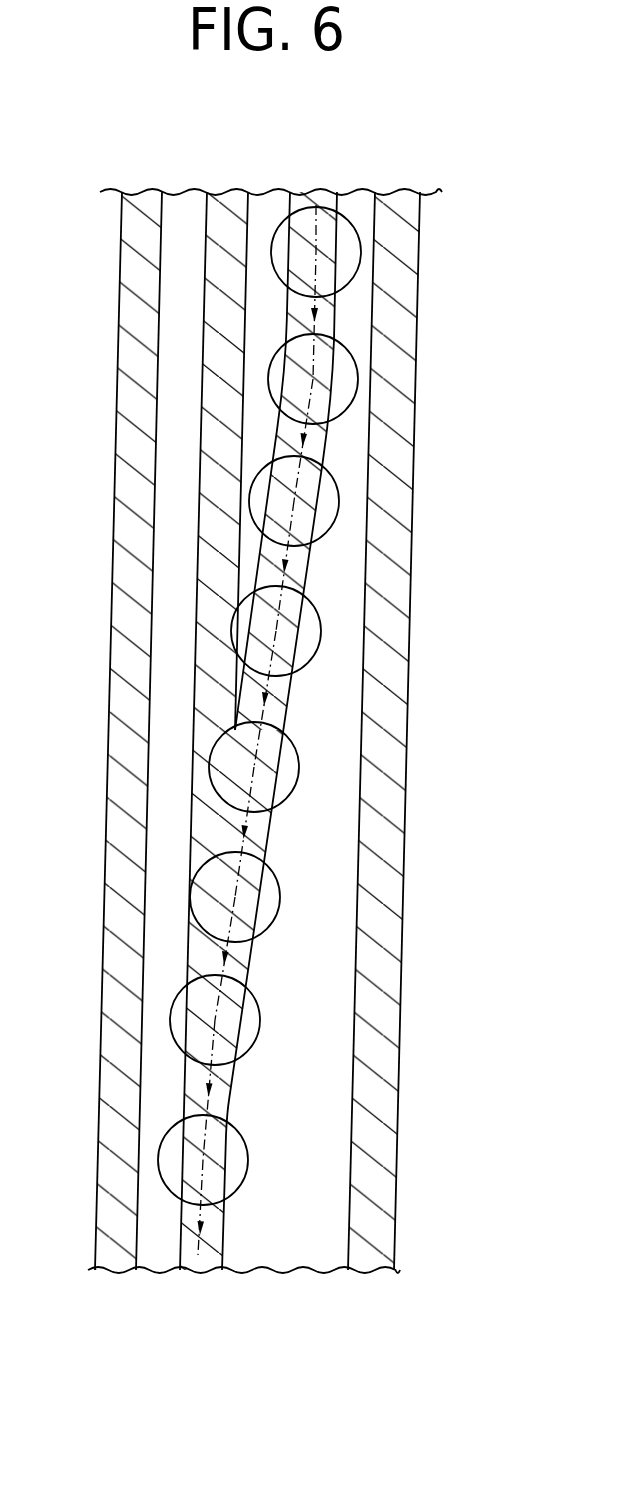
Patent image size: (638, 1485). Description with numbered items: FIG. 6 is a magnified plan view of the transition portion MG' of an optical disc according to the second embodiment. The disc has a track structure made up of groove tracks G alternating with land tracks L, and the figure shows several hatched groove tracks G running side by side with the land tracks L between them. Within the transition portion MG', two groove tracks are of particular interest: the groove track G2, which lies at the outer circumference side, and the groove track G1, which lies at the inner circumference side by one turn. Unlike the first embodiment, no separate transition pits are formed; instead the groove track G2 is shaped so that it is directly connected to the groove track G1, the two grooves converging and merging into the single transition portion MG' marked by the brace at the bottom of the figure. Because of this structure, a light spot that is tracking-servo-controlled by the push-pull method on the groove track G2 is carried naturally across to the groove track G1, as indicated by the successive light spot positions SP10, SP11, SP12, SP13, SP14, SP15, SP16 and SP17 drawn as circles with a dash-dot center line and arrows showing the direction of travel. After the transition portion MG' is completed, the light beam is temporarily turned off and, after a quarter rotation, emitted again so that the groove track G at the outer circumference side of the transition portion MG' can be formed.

The land track L is at (105, 194).
The groove track G is at (137, 205).
The groove track G1 is at (223, 198).
The groove track G2 is at (307, 199).
The transition portion MG' is at (221, 1037).
The light spot SP10 is at (347, 283).
The light spot SP11 is at (333, 423).
The light spot SP12 is at (317, 543).
The light spot SP13 is at (307, 663).
The light spot SP14 is at (298, 778).
The light spot SP15 is at (278, 895).
The light spot SP16 is at (260, 1018).
The light spot SP17 is at (247, 1157).